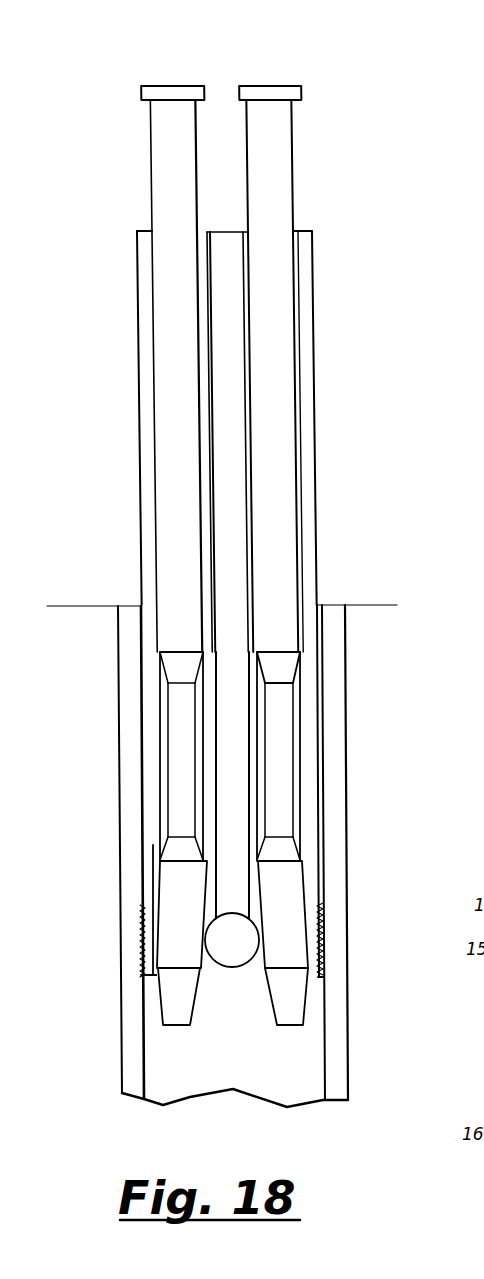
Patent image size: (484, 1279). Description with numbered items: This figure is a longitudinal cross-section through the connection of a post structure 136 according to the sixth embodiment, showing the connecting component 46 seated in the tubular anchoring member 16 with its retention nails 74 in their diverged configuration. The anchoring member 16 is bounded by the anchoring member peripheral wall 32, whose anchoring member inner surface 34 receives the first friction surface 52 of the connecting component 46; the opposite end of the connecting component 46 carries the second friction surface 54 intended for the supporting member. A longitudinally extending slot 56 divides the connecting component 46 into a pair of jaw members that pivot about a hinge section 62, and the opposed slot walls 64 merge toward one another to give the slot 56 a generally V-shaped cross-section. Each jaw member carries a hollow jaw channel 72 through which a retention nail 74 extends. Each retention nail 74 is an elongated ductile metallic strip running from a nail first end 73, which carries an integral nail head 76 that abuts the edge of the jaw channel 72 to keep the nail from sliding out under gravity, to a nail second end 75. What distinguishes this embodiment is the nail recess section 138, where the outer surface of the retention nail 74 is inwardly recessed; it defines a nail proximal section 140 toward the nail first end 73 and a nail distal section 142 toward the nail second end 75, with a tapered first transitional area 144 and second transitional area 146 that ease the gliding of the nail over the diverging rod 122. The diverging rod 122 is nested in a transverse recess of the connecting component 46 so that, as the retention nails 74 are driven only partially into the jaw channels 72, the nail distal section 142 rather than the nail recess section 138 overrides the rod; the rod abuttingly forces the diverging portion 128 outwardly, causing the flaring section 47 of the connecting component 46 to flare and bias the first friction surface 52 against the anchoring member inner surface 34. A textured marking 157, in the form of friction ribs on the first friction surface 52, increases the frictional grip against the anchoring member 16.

The anchoring member 16 is at (93, 1060).
The anchoring member peripheral wall 32 is at (140, 648).
The anchoring member inner surface 34 is at (146, 697).
The connecting component 46 is at (118, 378).
The flaring section 47 is at (140, 951).
The first friction surface 52 is at (143, 792).
The second friction surface 54 is at (138, 313).
The slot 56 is at (228, 428).
The hinge section 62 is at (223, 230).
The slot walls 64 is at (252, 371).
The jaw channel 72 is at (214, 525).
The nail first end 73 is at (323, 106).
The retention nail 74 is at (163, 152).
The nail second end 75 is at (314, 1002).
The nail head 76 is at (257, 85).
The diverging rod 122 is at (216, 938).
The diverging portion 128 is at (101, 937).
The post structure 136 is at (409, 324).
The nail recess section 138 is at (296, 746).
The nail proximal section 140 is at (355, 463).
The nail distal section 142 is at (310, 919).
The first transitional area 144 is at (299, 657).
The second transitional area 146 is at (298, 843).
The textured marking 157 is at (147, 975).